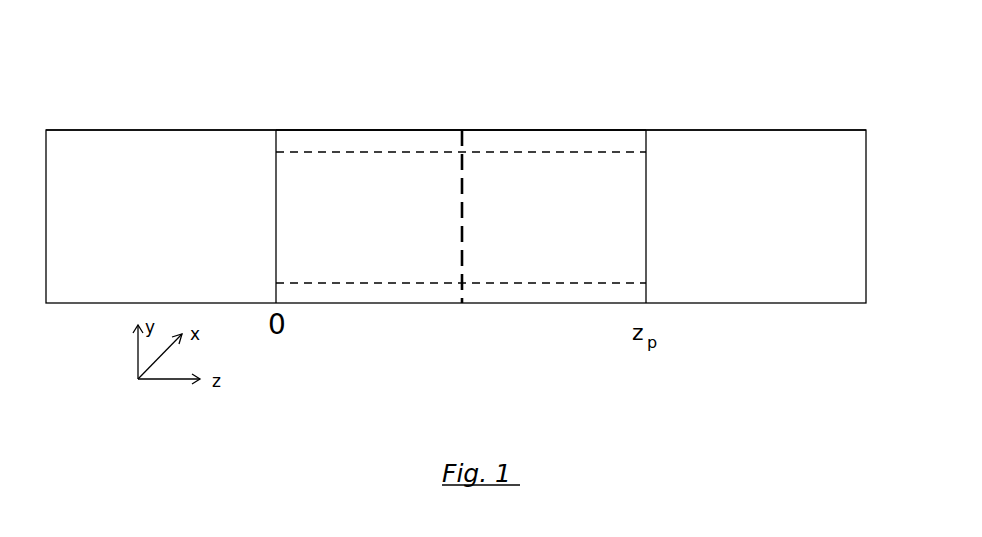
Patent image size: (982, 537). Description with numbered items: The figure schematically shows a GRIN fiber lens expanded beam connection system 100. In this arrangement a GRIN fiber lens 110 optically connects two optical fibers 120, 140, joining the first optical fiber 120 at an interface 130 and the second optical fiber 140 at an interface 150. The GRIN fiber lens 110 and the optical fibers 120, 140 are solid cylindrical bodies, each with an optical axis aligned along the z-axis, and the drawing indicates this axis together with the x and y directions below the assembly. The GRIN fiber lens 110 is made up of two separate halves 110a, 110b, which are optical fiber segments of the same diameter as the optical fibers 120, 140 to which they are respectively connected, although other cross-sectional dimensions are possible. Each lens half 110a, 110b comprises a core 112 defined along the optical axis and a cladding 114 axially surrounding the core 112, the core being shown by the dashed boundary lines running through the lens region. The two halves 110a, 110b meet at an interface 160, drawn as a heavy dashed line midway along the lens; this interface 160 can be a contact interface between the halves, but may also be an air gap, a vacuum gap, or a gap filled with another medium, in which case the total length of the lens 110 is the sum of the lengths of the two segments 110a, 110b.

The GRIN fiber lens expanded beam connection system 100 is at (128, 100).
The GRIN fiber lens 110 is at (509, 130).
The first half of GRIN fiber lens 110a is at (333, 130).
The second half of GRIN fiber lens 110b is at (555, 130).
The core 112 is at (405, 207).
The cladding 114 is at (382, 140).
The optical fiber 120 is at (165, 130).
The interface 130 is at (277, 130).
The optical fiber 140 is at (775, 130).
The interface 150 is at (646, 130).
The interface 160 is at (463, 245).